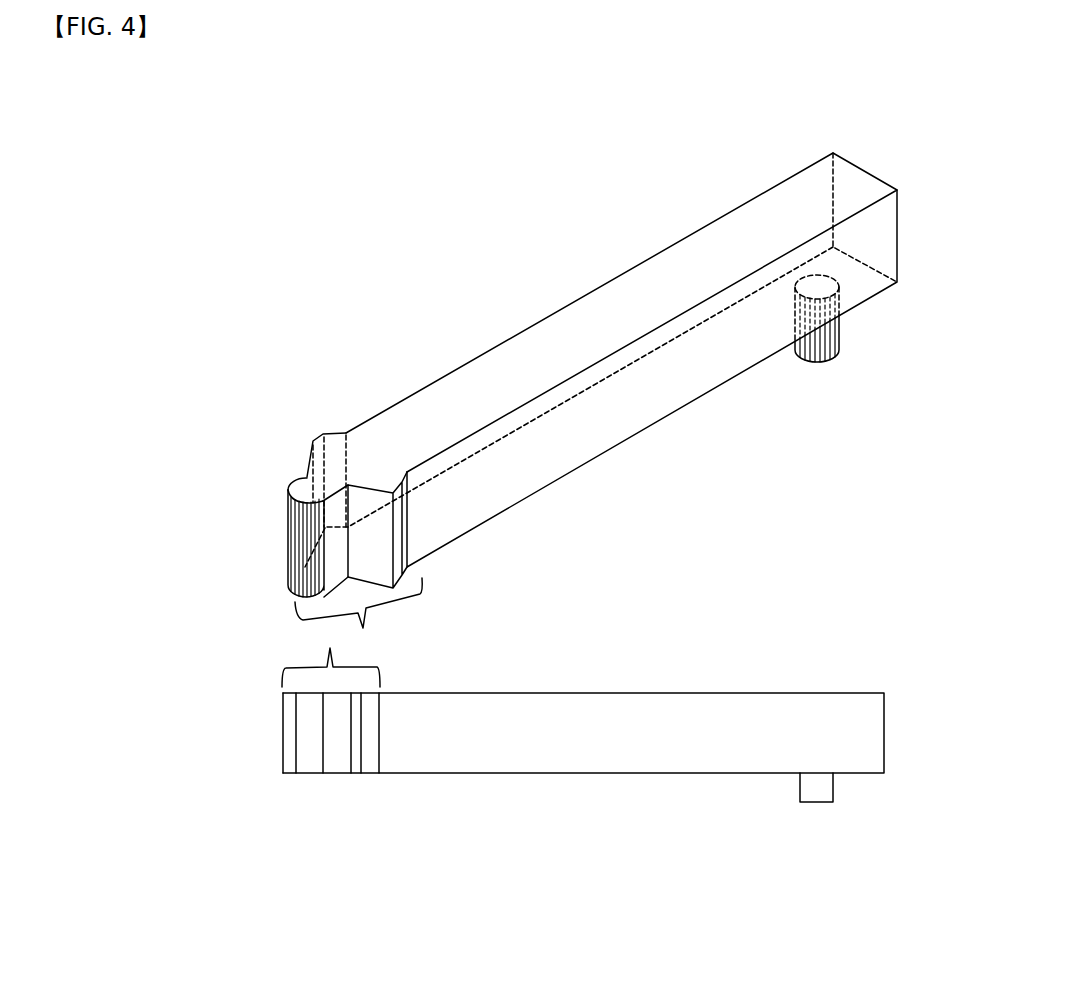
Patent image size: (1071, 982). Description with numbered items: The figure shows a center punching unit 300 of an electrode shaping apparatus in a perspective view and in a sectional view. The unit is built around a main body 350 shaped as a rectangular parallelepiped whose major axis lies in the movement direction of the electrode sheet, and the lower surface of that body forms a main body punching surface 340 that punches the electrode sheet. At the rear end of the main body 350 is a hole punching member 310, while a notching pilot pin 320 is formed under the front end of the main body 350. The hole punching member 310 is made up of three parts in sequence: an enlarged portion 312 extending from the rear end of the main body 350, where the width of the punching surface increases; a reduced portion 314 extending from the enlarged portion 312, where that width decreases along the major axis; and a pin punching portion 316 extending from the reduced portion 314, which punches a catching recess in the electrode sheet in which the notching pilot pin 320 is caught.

The center punching unit 300 is at (487, 538).
The hole punching member 310 is at (330, 648).
The enlarged portion 312 is at (383, 780).
The reduced portion 314 is at (300, 462).
The pin punching portion 316 is at (282, 553).
The notching pilot pin 320 is at (861, 573).
The main body punching surface 340 is at (655, 397).
The main body 350 is at (655, 300).